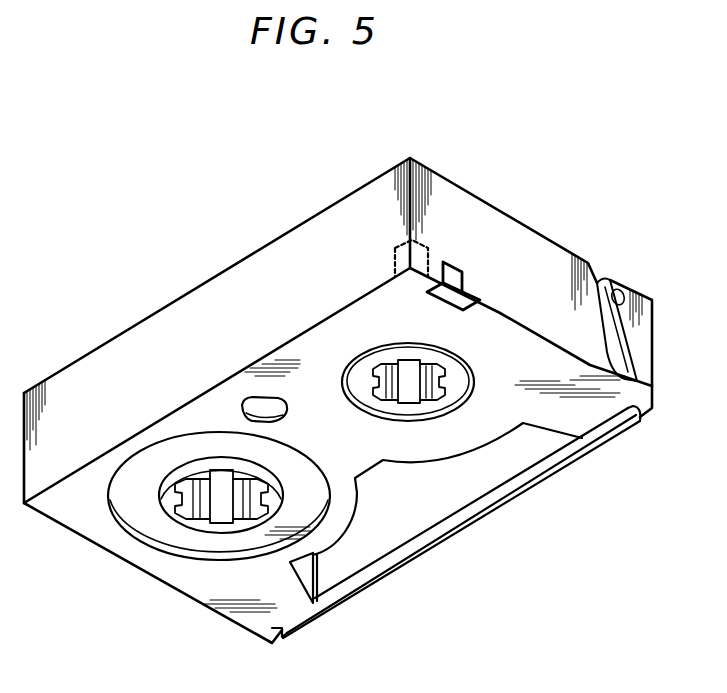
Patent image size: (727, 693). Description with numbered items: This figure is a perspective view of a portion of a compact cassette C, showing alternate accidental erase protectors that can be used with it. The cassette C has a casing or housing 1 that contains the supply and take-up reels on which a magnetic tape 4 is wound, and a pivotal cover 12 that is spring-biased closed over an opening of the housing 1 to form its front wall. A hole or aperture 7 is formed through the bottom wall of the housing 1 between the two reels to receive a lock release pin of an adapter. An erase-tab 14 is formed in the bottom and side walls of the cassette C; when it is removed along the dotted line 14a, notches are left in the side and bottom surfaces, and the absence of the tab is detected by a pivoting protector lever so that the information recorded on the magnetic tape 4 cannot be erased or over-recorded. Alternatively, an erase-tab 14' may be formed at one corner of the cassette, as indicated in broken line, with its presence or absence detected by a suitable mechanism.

The casing or housing 1 is at (243, 265).
The magnetic tape 4 is at (375, 547).
The hole or aperture 7 is at (240, 402).
The pivotal cover 12 is at (500, 505).
The erase-tab 14 is at (490, 239).
The erase-tab 14' is at (434, 208).
The dotted line 14a is at (440, 305).
The compact cassette C is at (500, 608).